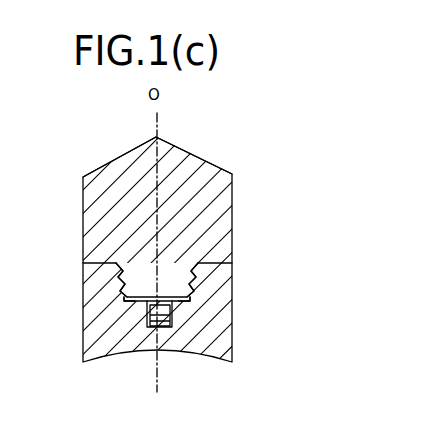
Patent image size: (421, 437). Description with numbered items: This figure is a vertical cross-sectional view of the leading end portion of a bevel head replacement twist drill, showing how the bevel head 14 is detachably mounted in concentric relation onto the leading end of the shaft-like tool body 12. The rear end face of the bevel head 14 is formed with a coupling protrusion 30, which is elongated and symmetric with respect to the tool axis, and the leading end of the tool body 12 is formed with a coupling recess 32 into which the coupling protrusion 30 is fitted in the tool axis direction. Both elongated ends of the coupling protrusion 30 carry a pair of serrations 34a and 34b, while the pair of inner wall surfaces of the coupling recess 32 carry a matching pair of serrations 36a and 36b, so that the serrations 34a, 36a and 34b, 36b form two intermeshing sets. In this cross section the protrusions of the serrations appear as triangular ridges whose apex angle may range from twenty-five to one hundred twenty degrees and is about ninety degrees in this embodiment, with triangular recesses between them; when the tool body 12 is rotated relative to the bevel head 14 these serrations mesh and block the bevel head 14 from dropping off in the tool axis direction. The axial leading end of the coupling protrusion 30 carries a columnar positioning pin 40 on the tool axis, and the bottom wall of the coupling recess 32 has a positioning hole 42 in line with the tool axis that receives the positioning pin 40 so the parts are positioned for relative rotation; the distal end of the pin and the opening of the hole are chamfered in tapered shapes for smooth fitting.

The tool body 12 is at (248, 350).
The bevel head 14 is at (70, 162).
The coupling protrusion 30 is at (178, 285).
The coupling recess 32 is at (140, 252).
The serration 34a is at (110, 281).
The serration 34b is at (212, 275).
The serration 36a is at (132, 304).
The serration 36b is at (185, 304).
The positioning pin 40 is at (155, 309).
The positioning hole 42 is at (161, 320).